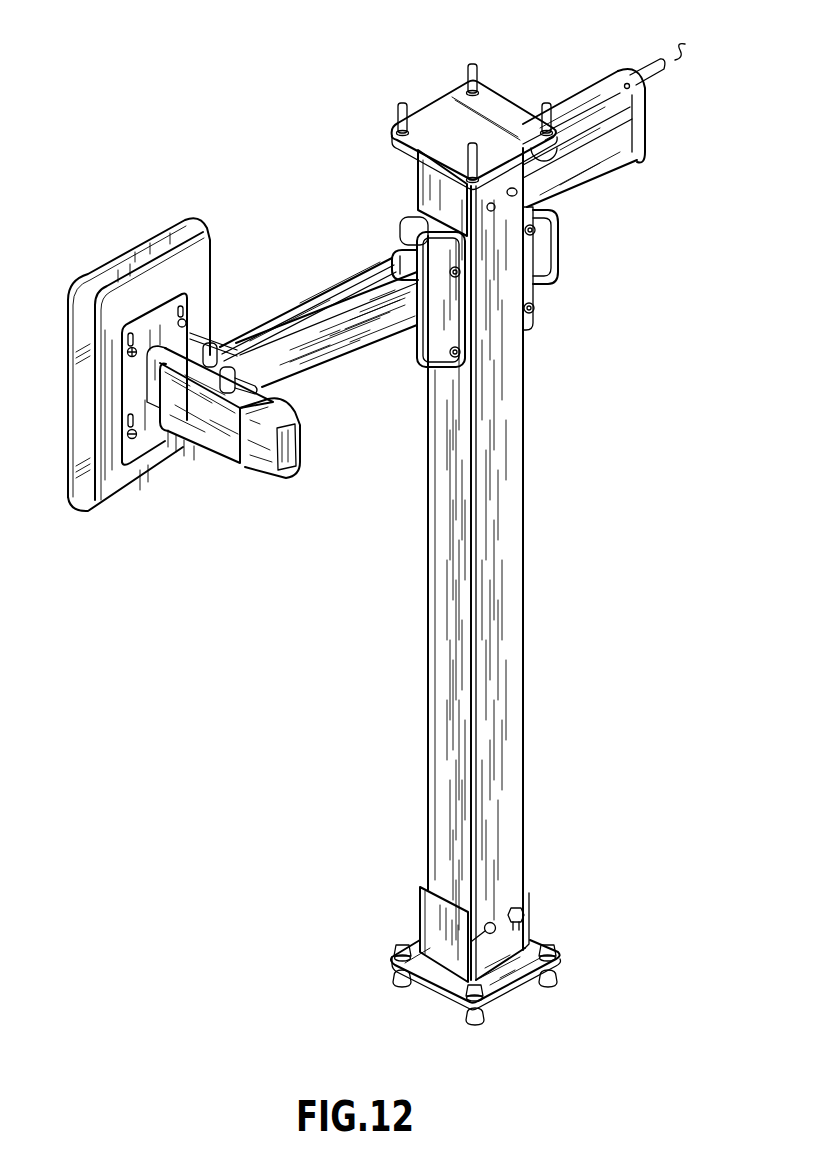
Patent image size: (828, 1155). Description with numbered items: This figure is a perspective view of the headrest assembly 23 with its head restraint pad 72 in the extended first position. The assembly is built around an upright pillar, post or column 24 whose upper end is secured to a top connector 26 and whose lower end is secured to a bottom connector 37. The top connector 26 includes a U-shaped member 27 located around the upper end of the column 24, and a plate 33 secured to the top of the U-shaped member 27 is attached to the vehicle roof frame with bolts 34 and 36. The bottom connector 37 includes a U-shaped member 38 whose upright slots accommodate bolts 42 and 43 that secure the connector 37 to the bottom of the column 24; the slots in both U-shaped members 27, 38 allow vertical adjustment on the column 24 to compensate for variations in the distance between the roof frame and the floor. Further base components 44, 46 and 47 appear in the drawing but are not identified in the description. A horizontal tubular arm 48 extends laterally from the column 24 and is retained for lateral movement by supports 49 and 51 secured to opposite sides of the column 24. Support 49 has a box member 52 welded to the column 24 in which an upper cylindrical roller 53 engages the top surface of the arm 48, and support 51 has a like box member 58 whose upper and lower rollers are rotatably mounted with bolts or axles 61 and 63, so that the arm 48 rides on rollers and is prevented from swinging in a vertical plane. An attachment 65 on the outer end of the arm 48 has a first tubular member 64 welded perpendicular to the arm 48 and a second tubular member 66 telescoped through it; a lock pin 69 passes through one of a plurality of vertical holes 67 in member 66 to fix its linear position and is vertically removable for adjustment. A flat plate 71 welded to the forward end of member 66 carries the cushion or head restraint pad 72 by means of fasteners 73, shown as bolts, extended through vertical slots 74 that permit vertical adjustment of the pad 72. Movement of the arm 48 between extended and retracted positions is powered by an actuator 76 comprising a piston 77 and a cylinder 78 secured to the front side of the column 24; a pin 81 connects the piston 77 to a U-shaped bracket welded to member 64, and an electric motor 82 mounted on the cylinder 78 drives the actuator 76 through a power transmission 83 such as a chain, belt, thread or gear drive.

The headrest assembly 23 is at (366, 574).
The column 24 is at (507, 603).
The top connector 26 is at (388, 170).
The U-shaped member 27 is at (430, 198).
The plate 33 is at (497, 107).
The bolt 34 is at (478, 68).
The bolt 36 is at (400, 107).
The bottom connector 37 is at (390, 891).
The U-shaped member 38 is at (433, 918).
The bolt 42 is at (523, 912).
The bolt 43 is at (489, 934).
The base plate 44 is at (503, 970).
The leveling foot 46 is at (555, 979).
The leveling foot 47 is at (474, 1026).
The horizontal arm 48 is at (355, 370).
The support 49 is at (424, 338).
The support 51 is at (572, 226).
The box member 52 is at (406, 334).
The upper cylindrical roller 53 is at (397, 278).
The box member 58 is at (532, 276).
The bolt or axle 61 is at (535, 235).
The bolt or axle 63 is at (532, 313).
The first tubular member 64 is at (208, 433).
The attachment 65 is at (172, 458).
The second tubular member 66 is at (267, 455).
The vertical holes 67 is at (282, 405).
The lock pin 69 is at (232, 365).
The flat plate 71 is at (132, 395).
The head restraint pad 72 is at (118, 262).
The fasteners 73 is at (132, 355).
The vertical slots 74 is at (128, 336).
The actuator 76 is at (603, 66).
The piston 77 is at (317, 312).
The cylinder 78 is at (598, 163).
The pin 81 is at (215, 334).
The electric motor 82 is at (585, 107).
The power transmission 83 is at (638, 130).